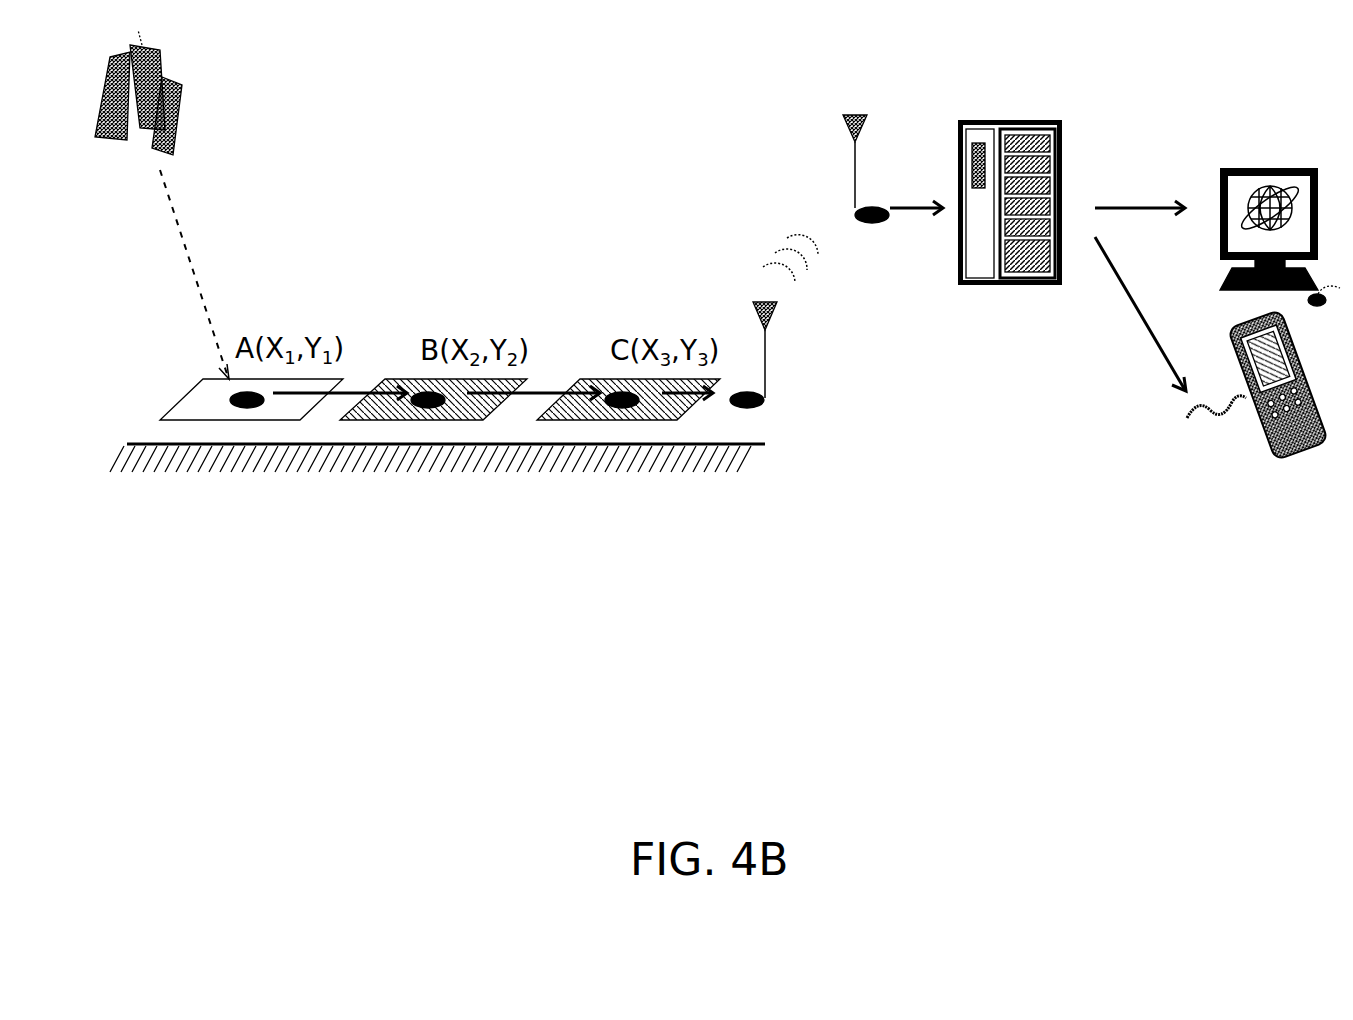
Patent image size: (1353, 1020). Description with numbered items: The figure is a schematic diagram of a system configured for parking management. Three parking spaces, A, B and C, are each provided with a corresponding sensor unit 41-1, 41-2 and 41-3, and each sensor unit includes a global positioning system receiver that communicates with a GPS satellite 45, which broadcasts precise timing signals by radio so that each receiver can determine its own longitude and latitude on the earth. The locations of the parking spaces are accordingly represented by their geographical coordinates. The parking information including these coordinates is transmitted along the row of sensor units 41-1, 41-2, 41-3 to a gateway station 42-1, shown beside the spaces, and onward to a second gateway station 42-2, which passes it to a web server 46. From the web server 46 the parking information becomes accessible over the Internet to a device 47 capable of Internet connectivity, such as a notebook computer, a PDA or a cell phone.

The sensor unit 41-1 is at (228, 398).
The sensor unit 41-2 is at (423, 392).
The sensor unit 41-3 is at (613, 395).
The gateway station 42-1 is at (765, 368).
The gateway station 42-2 is at (855, 175).
The GPS satellite 45 is at (185, 103).
The web server 46 is at (1033, 118).
The device capable of Internet connectivity 47 is at (1262, 170).